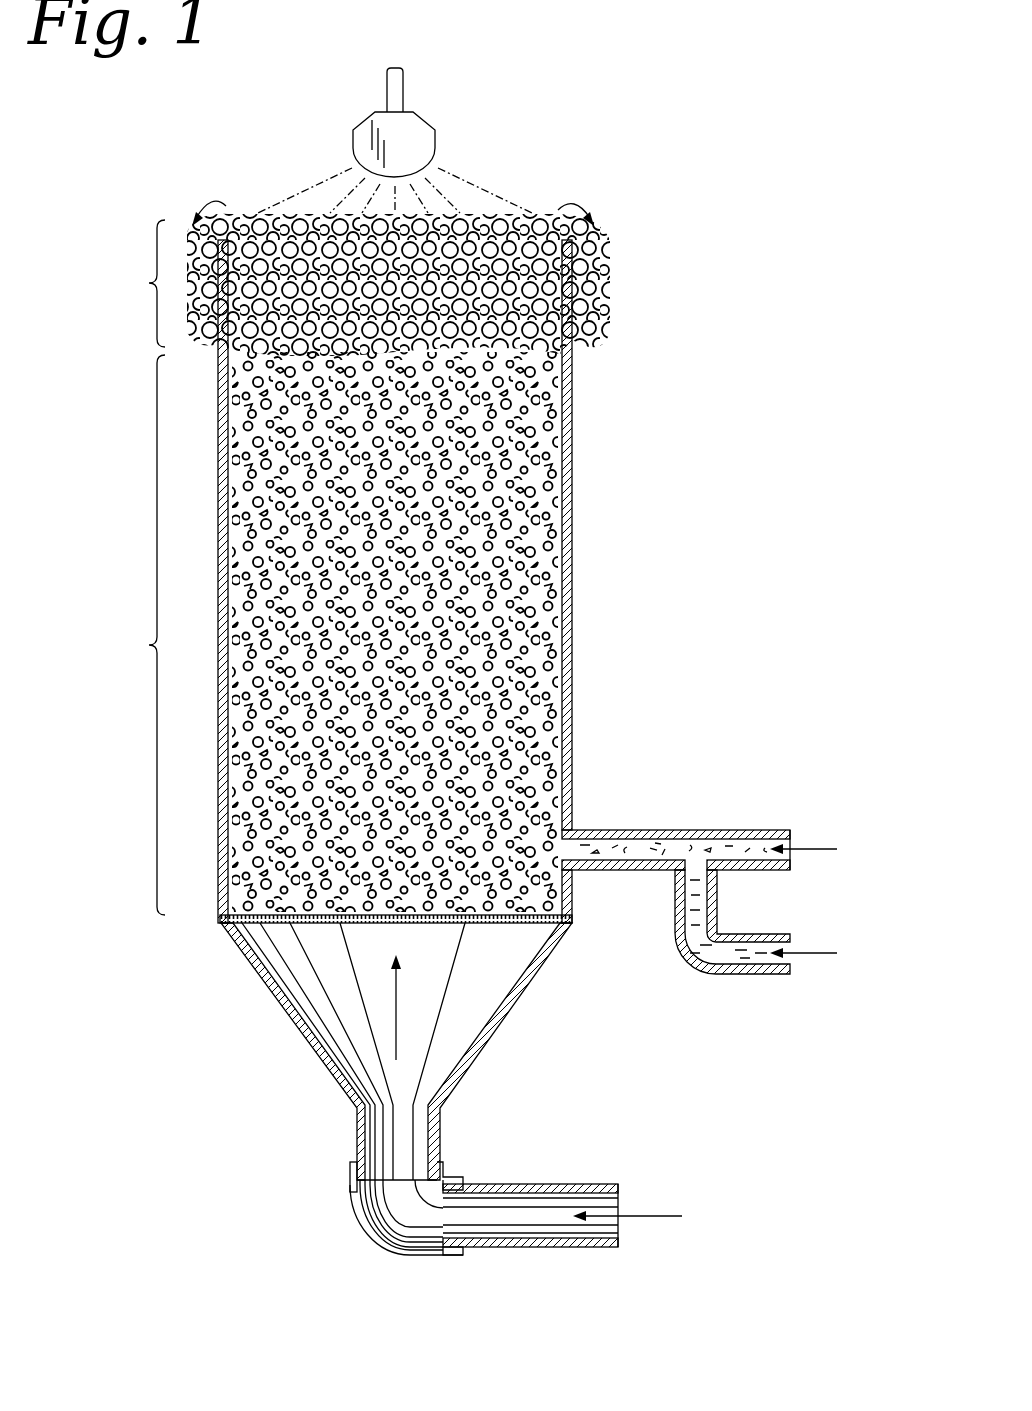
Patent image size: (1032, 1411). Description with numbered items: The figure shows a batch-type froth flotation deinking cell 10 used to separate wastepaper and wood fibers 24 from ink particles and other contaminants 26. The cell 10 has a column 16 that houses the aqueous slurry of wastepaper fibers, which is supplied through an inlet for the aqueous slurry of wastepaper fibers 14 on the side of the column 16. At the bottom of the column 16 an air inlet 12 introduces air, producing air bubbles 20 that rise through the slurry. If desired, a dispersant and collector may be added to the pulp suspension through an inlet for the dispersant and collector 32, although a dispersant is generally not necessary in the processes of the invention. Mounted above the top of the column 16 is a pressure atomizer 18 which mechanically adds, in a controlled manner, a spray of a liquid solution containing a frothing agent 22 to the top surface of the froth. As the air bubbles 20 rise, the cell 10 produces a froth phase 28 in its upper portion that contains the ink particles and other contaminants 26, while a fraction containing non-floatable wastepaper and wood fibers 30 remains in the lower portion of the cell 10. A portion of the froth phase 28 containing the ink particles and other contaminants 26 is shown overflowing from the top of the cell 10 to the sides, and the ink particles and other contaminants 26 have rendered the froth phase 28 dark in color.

The froth flotation deinking cell 10 is at (316, 1279).
The air inlet 12 is at (618, 1205).
The inlet for the aqueous slurry of wastepaper fibers 14 is at (790, 843).
The column 16 is at (572, 767).
The pressure atomizer 18 is at (420, 135).
The air bubbles 20 is at (547, 645).
The spray of a liquid solution containing a frothing agent 22 is at (513, 215).
The wastepaper and wood fibers 24 is at (547, 503).
The ink particles and other contaminants 26 is at (598, 297).
The froth phase 28 is at (278, 213).
The fraction containing non-floatable wastepaper and wood fibers 30 is at (137, 635).
The inlet for the dispersant and collector 32 is at (733, 957).